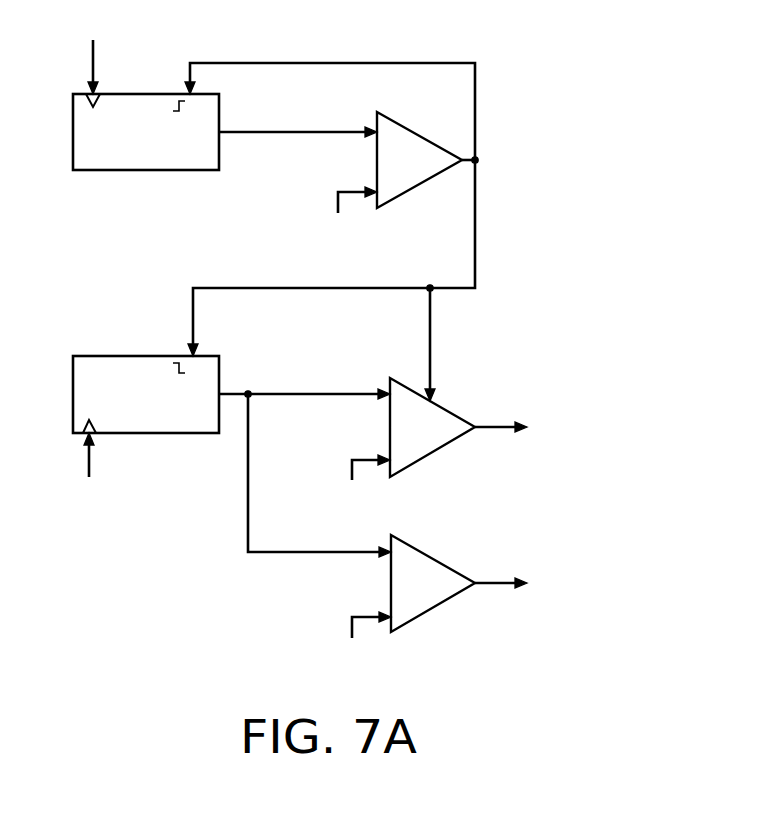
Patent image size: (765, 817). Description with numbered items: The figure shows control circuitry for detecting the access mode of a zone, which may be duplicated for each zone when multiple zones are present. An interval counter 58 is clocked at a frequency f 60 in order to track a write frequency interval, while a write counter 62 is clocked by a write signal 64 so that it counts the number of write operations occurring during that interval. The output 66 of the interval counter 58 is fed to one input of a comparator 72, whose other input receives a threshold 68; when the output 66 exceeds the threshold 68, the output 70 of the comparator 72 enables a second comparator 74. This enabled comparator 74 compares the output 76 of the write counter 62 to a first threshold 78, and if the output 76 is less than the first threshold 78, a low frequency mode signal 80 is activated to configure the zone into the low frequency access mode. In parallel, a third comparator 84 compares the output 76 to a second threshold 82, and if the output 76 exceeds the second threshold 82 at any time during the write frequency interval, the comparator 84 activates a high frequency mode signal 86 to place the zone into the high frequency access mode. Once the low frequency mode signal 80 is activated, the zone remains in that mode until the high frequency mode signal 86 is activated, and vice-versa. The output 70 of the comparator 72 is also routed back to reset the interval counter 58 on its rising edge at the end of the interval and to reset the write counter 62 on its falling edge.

The interval counter 58 is at (146, 93).
The frequency f 60 is at (87, 63).
The write counter 62 is at (146, 355).
The write signal 64 is at (85, 459).
The output of the interval counter 66 is at (278, 130).
The threshold 68 is at (335, 201).
The output of comparator 70 is at (477, 173).
The comparator 72 is at (417, 193).
The comparator 74 is at (437, 458).
The output of the write frequency counter 76 is at (284, 392).
The first threshold 78 is at (350, 465).
The low frequency mode signal 80 is at (497, 425).
The second threshold 82 is at (350, 622).
The comparator 84 is at (437, 611).
The high frequency mode signal 86 is at (495, 581).